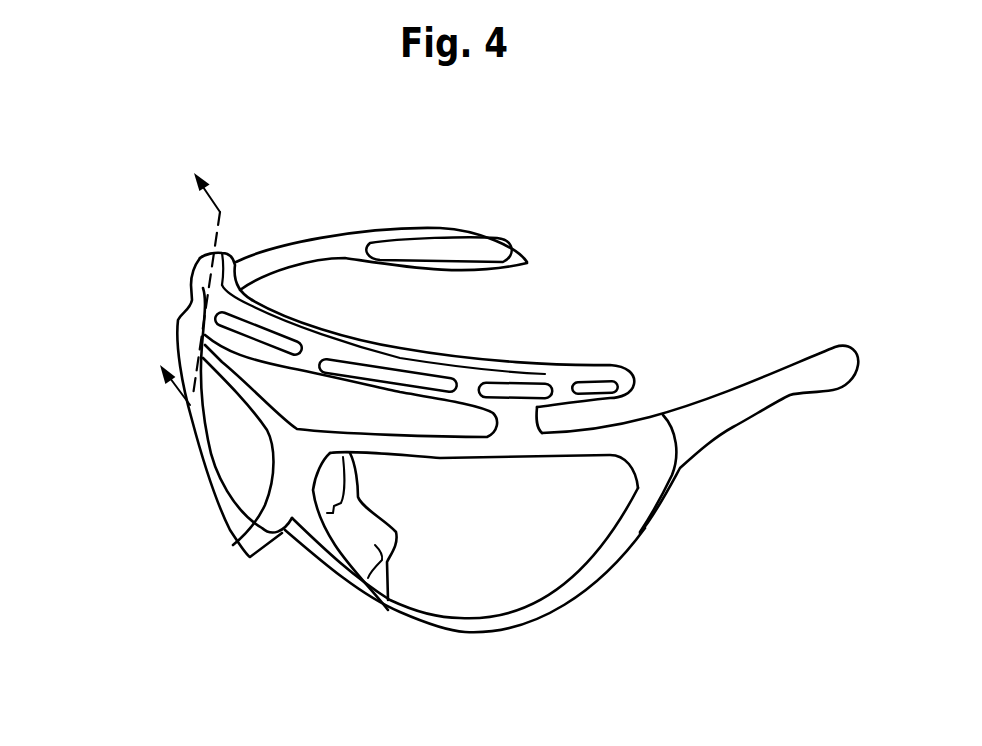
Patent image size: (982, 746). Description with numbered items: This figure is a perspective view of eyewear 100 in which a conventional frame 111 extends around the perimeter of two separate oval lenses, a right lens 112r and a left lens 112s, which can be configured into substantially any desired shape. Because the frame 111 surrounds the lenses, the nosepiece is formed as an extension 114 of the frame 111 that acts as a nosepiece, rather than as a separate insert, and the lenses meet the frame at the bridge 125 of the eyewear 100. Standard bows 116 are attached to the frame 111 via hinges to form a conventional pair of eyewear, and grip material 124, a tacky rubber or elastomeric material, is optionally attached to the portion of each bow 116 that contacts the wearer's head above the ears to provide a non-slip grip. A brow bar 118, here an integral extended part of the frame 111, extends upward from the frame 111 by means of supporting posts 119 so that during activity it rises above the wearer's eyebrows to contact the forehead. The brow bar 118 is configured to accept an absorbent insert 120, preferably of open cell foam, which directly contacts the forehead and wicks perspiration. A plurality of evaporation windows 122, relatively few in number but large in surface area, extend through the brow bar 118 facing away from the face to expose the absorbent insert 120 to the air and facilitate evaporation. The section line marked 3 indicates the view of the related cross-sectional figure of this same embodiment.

The eyewear 100 is at (186, 583).
The section line for Fig. 3 is at (180, 280).
The frame 111 is at (473, 452).
The left lens 112s is at (543, 543).
The right lens 112r is at (220, 432).
The extension of frame nosepiece 114 is at (280, 527).
The bow 116 is at (742, 403).
The brow bar 118 is at (634, 387).
The supporting post 119 is at (520, 422).
The absorbent insert 120 is at (533, 367).
The evaporation window 122 is at (390, 377).
The grip material 124 is at (455, 258).
The bridge 125 is at (284, 440).